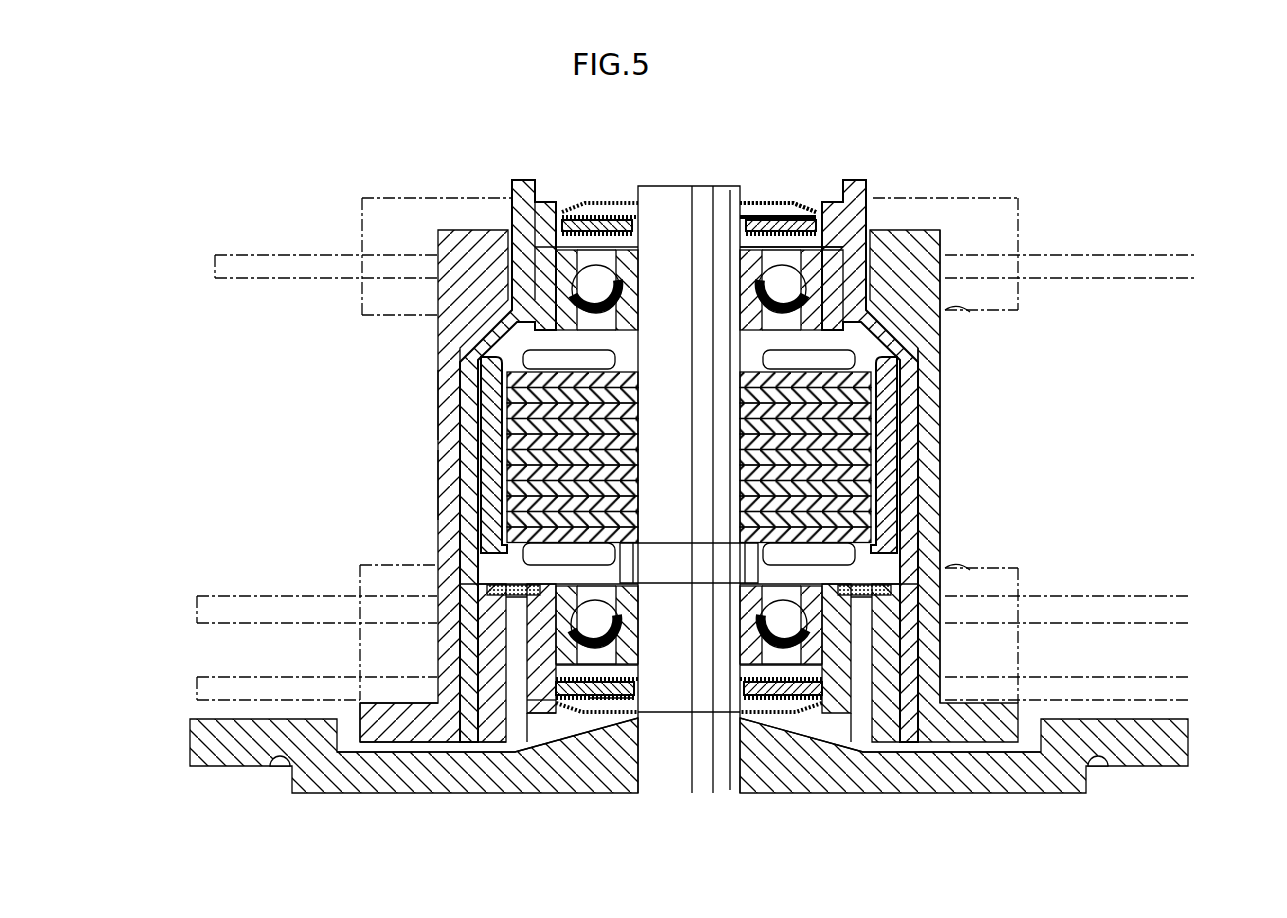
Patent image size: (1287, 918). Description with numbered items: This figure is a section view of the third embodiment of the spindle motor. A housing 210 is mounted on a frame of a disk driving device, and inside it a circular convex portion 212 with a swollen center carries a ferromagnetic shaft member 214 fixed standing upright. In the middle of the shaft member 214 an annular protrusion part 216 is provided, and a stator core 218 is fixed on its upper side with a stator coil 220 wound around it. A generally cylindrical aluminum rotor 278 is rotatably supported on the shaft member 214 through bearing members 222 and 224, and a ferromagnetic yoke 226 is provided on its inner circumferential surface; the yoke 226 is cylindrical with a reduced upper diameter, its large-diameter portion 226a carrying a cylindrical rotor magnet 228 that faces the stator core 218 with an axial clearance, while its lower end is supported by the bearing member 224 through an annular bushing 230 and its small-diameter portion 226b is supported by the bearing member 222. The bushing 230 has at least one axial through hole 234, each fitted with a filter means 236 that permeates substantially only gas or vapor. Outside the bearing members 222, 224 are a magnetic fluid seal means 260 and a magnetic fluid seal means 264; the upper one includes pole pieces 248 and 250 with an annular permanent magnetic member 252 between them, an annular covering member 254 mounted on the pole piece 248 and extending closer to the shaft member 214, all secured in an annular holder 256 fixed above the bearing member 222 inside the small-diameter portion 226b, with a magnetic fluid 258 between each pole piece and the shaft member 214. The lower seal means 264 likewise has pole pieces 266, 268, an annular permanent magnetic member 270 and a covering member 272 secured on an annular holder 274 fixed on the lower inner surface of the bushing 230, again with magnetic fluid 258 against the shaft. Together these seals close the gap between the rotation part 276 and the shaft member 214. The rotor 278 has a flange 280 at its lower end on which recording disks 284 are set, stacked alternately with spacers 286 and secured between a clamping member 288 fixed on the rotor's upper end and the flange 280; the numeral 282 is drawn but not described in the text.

The housing 210 is at (317, 795).
The circular convex portion 212 is at (420, 752).
The shaft member 214 is at (728, 186).
The annular protrusion part 216 is at (658, 553).
The stator core 218 is at (630, 405).
The stator coil 220 is at (540, 357).
The bearing member 222 is at (563, 293).
The bearing member 224 is at (357, 615).
The yoke 226 is at (920, 318).
The large-diameter portion 226a is at (465, 547).
The small-diameter portion 226b is at (510, 192).
The rotor magnet 228 is at (493, 443).
The annular bushing 230 is at (480, 725).
The through hole 234 is at (535, 670).
The filter means 236 is at (473, 607).
The pole piece 248 is at (784, 218).
The pole piece 250 is at (844, 238).
The annular permanent magnetic member 252 is at (808, 214).
The annular covering member 254 is at (770, 203).
The annular holder 256 is at (814, 232).
The magnetic fluid 258 is at (745, 236).
The magnetic fluid seal means 260 is at (572, 200).
The magnetic fluid seal means 264 is at (560, 628).
The pole piece 266 is at (547, 713).
The pole piece 268 is at (550, 707).
The annular permanent magnetic member 270 is at (677, 700).
The covering member 272 is at (603, 723).
The annular holder 274 is at (500, 742).
The rotation part 276 is at (940, 424).
The rotor 278 is at (438, 405).
The flange 280 is at (383, 722).
The housing lower wall 282 is at (445, 485).
The recording disk 284 is at (1104, 256).
The spacer 286 is at (1010, 296).
The clamping member 288 is at (1007, 205).